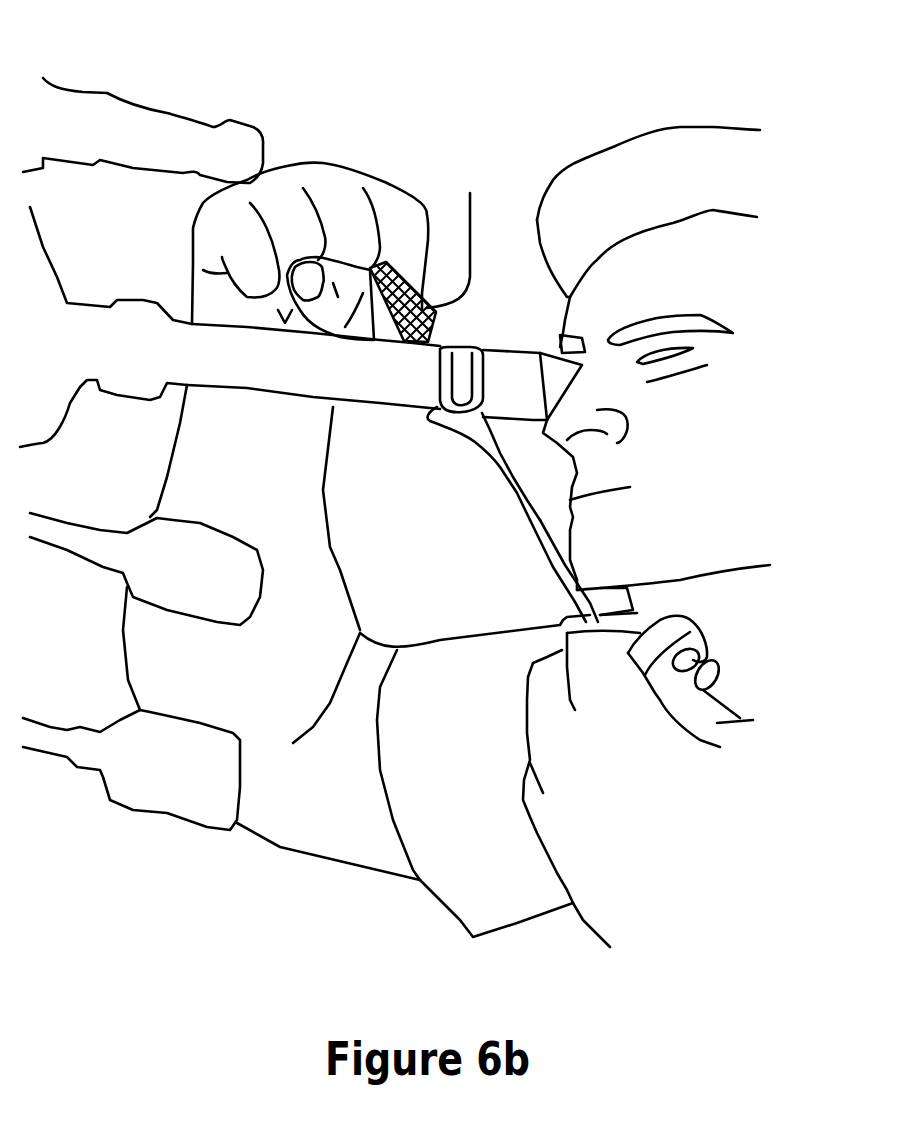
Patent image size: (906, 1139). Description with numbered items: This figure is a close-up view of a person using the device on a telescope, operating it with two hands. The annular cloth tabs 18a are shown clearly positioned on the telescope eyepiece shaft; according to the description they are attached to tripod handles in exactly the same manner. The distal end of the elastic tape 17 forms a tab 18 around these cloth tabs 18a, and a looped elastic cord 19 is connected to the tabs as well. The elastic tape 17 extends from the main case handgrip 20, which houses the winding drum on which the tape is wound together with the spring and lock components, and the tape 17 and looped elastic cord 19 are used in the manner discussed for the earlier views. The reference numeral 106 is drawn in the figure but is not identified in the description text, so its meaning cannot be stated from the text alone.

The rail 106 is at (90, 118).
The looped elastic cord 19 is at (464, 226).
The annular cloth tabs 18a is at (440, 388).
The tab 18 is at (463, 457).
The elastic tape 17 is at (550, 567).
The main case handgrip 20 is at (690, 632).